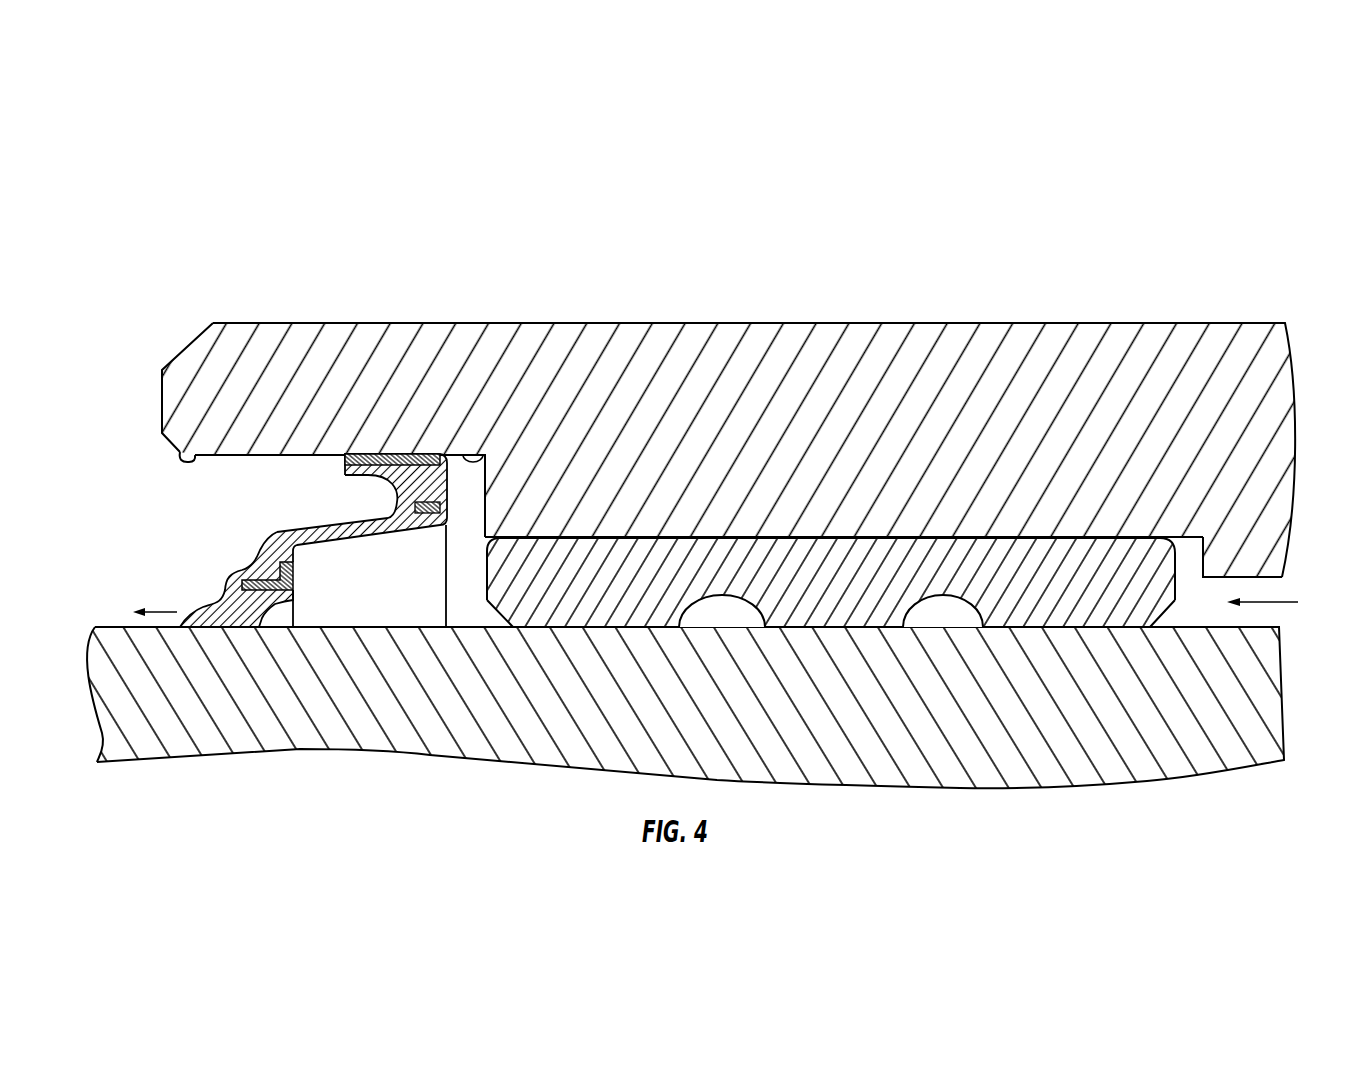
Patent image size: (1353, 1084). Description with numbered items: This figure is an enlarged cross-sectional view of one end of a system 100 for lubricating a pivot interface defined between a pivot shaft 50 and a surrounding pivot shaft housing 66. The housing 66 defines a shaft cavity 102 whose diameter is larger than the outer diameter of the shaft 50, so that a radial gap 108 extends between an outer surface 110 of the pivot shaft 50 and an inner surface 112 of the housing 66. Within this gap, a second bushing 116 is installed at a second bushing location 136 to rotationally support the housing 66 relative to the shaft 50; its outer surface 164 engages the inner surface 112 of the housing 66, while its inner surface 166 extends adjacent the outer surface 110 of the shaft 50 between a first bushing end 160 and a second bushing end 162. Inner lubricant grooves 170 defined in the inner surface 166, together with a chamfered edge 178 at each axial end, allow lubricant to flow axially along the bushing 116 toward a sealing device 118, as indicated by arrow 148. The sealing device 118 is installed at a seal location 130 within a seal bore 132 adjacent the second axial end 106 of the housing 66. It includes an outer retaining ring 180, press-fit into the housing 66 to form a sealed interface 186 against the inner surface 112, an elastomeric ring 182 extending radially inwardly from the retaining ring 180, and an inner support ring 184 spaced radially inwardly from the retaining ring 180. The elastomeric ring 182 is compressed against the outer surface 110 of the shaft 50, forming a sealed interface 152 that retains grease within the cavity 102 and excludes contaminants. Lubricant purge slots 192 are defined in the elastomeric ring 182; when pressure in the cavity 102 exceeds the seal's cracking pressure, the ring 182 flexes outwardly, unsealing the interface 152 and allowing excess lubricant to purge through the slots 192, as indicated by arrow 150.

The system 100 is at (447, 195).
The pivot shaft housing 66 is at (1082, 321).
The seal location 130 is at (362, 363).
The second bushing location 136 is at (907, 351).
The second axial end 106 is at (158, 397).
The seal bore 132 is at (190, 463).
The inner surface 112 is at (481, 452).
The outer surface 164 is at (907, 537).
The second bushing end 162 is at (1176, 572).
The pivot shaft 50 is at (270, 753).
The outer surface 110 is at (107, 627).
The second bushing 116 is at (714, 557).
The inner lubricant groove 170 is at (693, 612).
The inner surface 166 is at (830, 630).
The chamfered edge 178 is at (500, 623).
The first bushing end 160 is at (488, 593).
The sealing device 118 is at (241, 530).
The outer retaining ring 180 is at (398, 457).
The sealed interface 186 is at (369, 453).
The elastomeric ring 182 is at (328, 540).
The inner support ring 184 is at (293, 574).
The lubricant purge slot 192 is at (267, 620).
The sealed interface 152 is at (212, 629).
The arrow 150 is at (158, 603).
The arrow 148 is at (1273, 603).
The shaft cavity 102 is at (1207, 612).
The radial gap 108 is at (1253, 670).